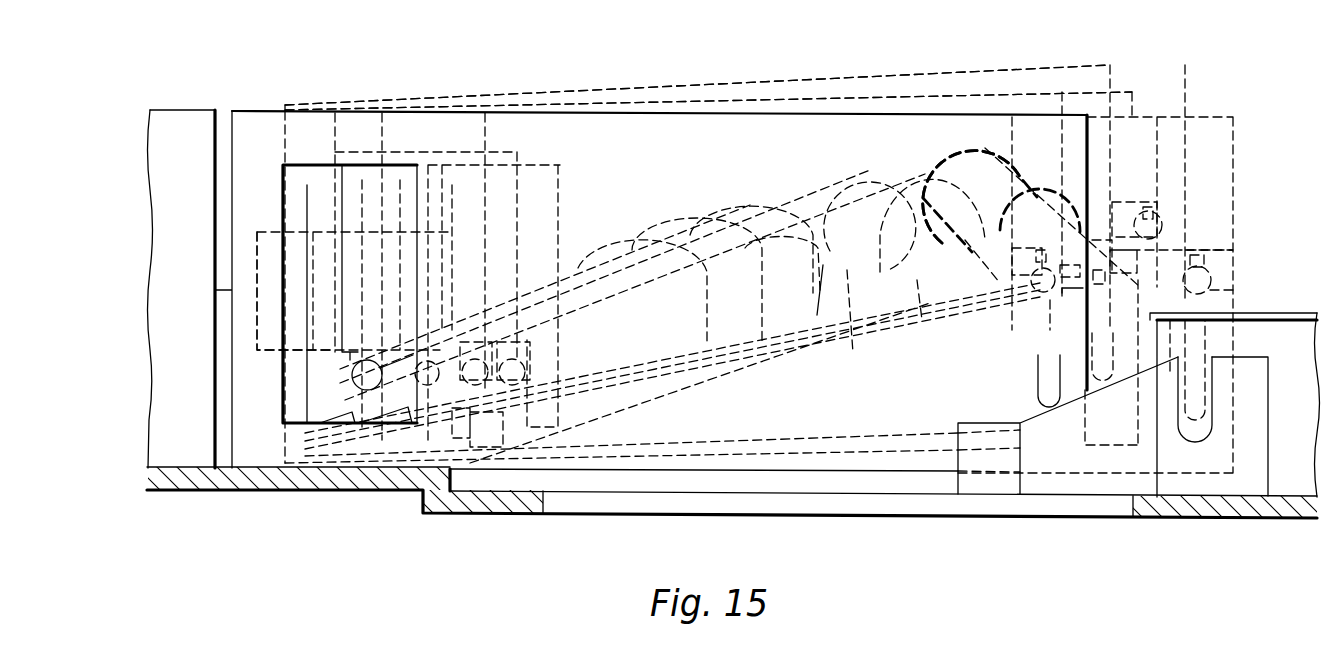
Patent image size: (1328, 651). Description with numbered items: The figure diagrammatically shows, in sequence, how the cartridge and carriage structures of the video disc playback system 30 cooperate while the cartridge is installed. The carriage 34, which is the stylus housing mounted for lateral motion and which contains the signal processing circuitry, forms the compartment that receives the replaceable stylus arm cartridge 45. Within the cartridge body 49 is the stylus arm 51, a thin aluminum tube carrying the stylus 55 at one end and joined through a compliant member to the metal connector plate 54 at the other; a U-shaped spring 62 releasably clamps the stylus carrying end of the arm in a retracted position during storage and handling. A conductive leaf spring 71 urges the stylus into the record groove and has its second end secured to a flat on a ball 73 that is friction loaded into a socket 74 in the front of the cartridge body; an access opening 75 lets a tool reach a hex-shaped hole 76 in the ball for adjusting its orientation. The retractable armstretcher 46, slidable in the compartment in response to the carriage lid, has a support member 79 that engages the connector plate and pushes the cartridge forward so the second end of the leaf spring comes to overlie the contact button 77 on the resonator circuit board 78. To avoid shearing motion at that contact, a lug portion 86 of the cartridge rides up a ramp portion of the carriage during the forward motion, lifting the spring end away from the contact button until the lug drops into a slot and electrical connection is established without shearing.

The video disc playback system 30 is at (1250, 113).
The carriage 34 is at (370, 490).
The stylus arm cartridge 45 is at (667, 163).
The armstretcher 46 is at (190, 201).
The cartridge body 49 is at (835, 114).
The stylus arm 51 is at (732, 377).
The connector plate 54 is at (307, 205).
The stylus 55 is at (1007, 328).
The U-shaped spring 62 is at (644, 310).
The leaf spring 71 is at (974, 213).
The ball 73 is at (1066, 288).
The socket 74 is at (1092, 282).
The access opening 75 is at (1040, 270).
The hex-shaped hole 76 is at (1048, 268).
The contact button 77 is at (1228, 288).
The resonator circuit board 78 is at (1277, 320).
The support member 79 is at (262, 350).
The lug portion 86 is at (1038, 378).